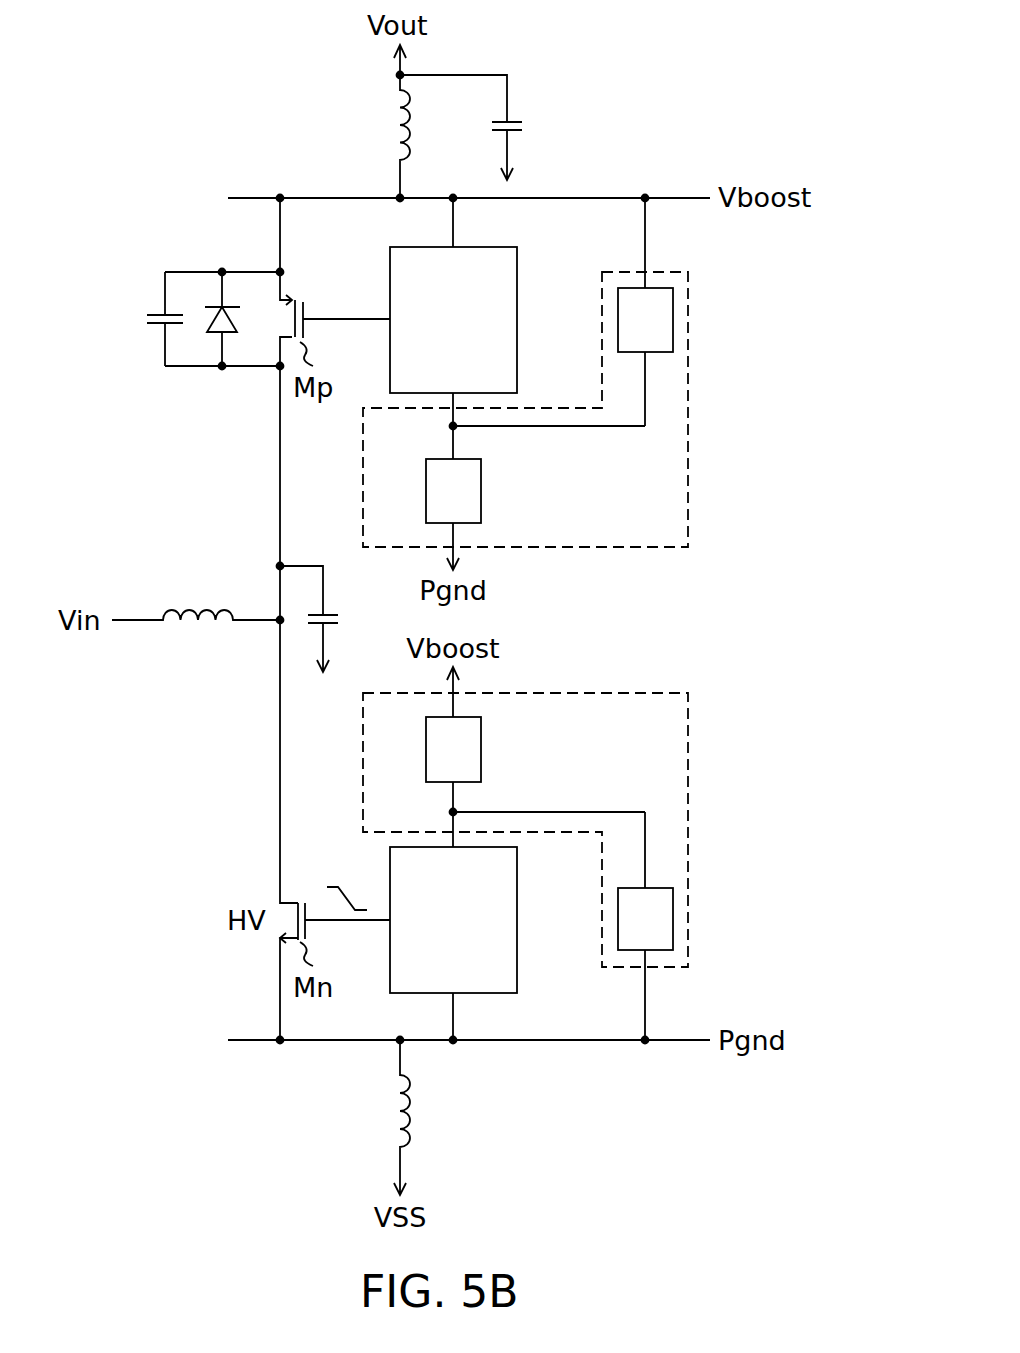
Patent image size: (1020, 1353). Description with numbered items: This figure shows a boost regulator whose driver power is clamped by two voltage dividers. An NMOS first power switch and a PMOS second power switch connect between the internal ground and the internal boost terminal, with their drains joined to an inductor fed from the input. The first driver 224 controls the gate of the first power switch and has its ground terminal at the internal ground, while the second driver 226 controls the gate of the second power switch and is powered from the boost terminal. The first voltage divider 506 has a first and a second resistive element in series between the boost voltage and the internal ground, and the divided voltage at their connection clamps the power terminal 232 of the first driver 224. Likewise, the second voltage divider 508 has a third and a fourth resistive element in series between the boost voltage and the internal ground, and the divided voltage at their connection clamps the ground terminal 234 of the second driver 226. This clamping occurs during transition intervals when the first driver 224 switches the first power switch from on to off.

The second driver 226 is at (486, 247).
The first driver 224 is at (483, 993).
The ground terminal of the second driver 234 is at (450, 426).
The power terminal of the first driver 232 is at (450, 812).
The second voltage divider 508 is at (575, 384).
The first voltage divider 506 is at (575, 853).